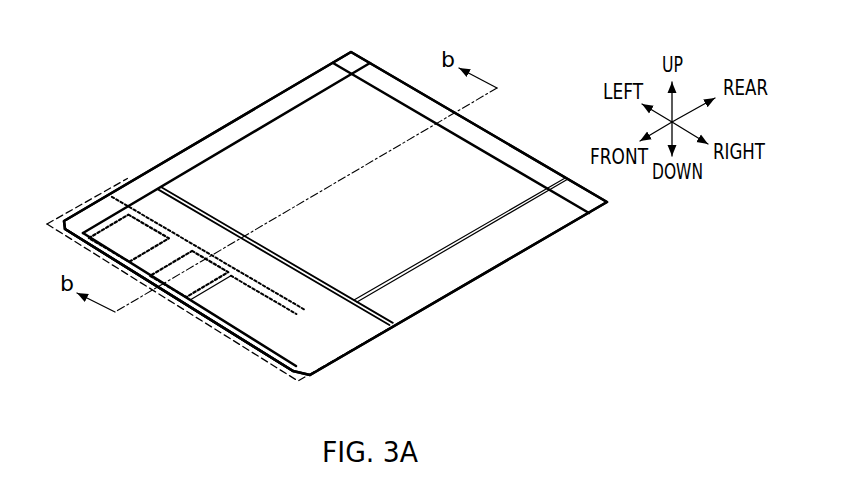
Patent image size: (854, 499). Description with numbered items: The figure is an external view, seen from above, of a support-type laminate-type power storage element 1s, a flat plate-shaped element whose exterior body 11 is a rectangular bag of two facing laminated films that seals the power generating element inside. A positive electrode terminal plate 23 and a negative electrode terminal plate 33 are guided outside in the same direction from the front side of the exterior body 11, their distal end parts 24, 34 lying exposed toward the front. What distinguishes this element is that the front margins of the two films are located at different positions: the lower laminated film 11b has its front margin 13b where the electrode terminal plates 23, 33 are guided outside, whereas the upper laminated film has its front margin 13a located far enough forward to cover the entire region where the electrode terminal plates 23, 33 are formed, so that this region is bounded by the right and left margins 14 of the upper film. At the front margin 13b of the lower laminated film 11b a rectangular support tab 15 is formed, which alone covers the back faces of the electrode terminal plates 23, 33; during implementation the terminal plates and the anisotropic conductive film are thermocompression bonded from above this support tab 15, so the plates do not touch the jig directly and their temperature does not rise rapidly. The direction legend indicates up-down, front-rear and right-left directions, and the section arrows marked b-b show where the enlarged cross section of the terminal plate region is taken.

The support-type laminate-type power storage element 1s is at (468, 50).
The exterior body 11 is at (481, 260).
The lower laminated film 11b is at (338, 330).
The right and left margins 14 is at (193, 141).
The front margin of the upper laminated film 13a is at (236, 338).
The front margin of the lower laminated film 13b is at (302, 313).
The support tab 15 is at (305, 382).
The positive electrode terminal plate 23 is at (126, 241).
The distal end part of the positive electrode terminal plate 24 is at (120, 258).
The negative electrode terminal plate 33 is at (197, 273).
The distal end part of the negative electrode terminal plate 34 is at (198, 297).